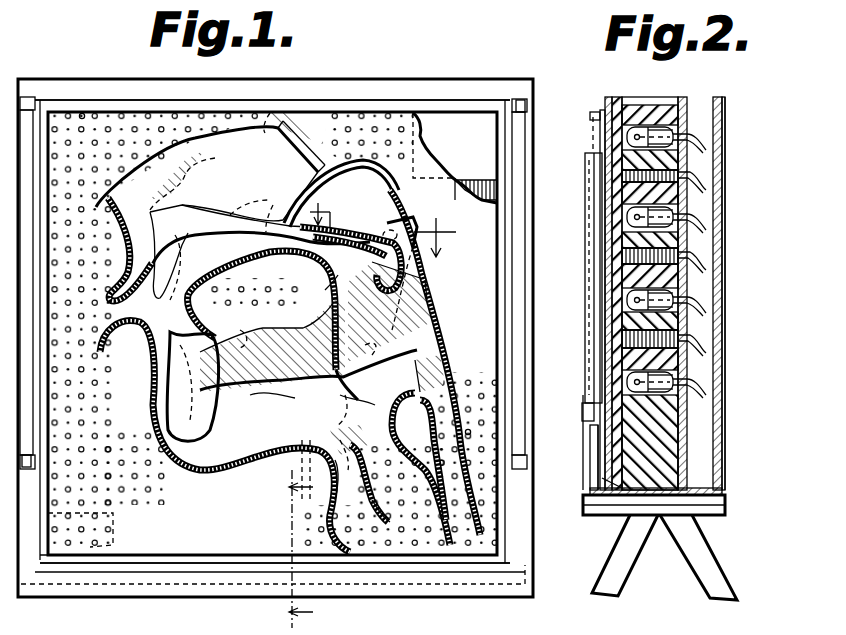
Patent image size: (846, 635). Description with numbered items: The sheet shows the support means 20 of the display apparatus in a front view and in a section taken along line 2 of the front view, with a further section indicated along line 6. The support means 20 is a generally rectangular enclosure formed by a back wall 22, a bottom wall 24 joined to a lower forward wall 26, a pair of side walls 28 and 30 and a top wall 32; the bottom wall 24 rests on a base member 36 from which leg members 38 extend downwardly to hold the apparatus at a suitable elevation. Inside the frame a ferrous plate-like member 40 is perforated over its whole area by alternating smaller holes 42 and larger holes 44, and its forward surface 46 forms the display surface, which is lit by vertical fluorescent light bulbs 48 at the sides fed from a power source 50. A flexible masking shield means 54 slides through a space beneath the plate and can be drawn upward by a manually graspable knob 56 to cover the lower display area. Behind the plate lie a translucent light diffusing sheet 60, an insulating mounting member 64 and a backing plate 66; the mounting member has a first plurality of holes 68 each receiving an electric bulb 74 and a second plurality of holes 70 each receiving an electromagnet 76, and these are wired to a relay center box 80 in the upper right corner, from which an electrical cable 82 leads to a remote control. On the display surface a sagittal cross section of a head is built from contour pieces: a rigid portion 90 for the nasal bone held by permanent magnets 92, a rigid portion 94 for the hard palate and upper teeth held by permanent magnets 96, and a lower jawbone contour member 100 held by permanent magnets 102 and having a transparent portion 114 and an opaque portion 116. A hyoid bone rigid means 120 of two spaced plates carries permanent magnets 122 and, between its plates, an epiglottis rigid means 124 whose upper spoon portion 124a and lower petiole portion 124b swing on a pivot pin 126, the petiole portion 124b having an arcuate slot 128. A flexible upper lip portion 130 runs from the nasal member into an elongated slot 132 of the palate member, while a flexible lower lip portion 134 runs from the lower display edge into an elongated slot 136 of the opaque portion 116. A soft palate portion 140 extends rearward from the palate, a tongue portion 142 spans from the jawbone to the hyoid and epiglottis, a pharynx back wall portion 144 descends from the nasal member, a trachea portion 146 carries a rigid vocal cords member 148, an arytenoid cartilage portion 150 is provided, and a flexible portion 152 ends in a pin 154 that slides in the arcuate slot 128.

In FIG. 1, the section line 2— 2 is at (269, 534).
In FIG. 1, the section line 6— 6 is at (382, 347).
In FIG. 1, the support means 20 is at (491, 76).
In FIG. 2, the support means 20 is at (750, 120).
In FIG. 2, the back wall 22 is at (728, 441).
In FIG. 2, the bottom wall 24 is at (700, 515).
In FIG. 1, the lower forward wall 26 is at (380, 590).
In FIG. 2, the lower forward wall 26 is at (592, 470).
In FIG. 1, the side wall 28 is at (20, 103).
In FIG. 1, the side wall 30 is at (532, 470).
In FIG. 2, the side wall 30 is at (548, 490).
In FIG. 1, the top wall 32 is at (344, 90).
In FIG. 2, the base member 36 is at (604, 515).
In FIG. 2, the leg members 38 is at (668, 580).
In FIG. 1, the plate-like member 40 is at (204, 514).
In FIG. 2, the plate-like member 40 is at (612, 97).
In FIG. 1, the holes 42 is at (82, 114).
In FIG. 2, the holes 42 is at (622, 175).
In FIG. 1, the holes 44 is at (97, 114).
In FIG. 2, the holes 44 is at (622, 140).
In FIG. 2, the forward surface 46 is at (606, 103).
In FIG. 1, the fluorescent light bulbs 48 is at (528, 146).
In FIG. 2, the fluorescent light bulbs 48 is at (594, 118).
In FIG. 1, the power source 50 is at (128, 531).
In FIG. 1, the masking shield means 54 is at (470, 580).
In FIG. 2, the masking shield means 54 is at (590, 450).
In FIG. 1, the manually graspable knob 56 is at (270, 565).
In FIG. 2, the manually graspable knob 56 is at (588, 412).
In FIG. 2, the light diffusing sheet 60 is at (614, 96).
In FIG. 2, the mounting member 64 is at (682, 98).
In FIG. 2, the backing plate 66 is at (718, 98).
In FIG. 2, the first plurality of holes 68 is at (632, 118).
In FIG. 2, the second plurality of holes 70 is at (575, 274).
In FIG. 2, the electric bulb 74 is at (710, 139).
In FIG. 2, the electromagnet 76 is at (710, 177).
In FIG. 1, the relay center box 80 is at (432, 112).
In FIG. 1, the electrical cable 82 is at (482, 203).
In FIG. 1, the rigid contour portion 90 is at (176, 148).
In FIG. 1, the permanent magnets 92 is at (208, 143).
In FIG. 1, the rigid contour portion 94 is at (222, 217).
In FIG. 1, the permanent magnets 96 is at (188, 286).
In FIG. 1, the lower jawbone contour member 100 is at (266, 325).
In FIG. 1, the permanent magnets 102 is at (178, 434).
In FIG. 1, the transparent jawbone portion 114 is at (272, 413).
In FIG. 1, the opaque jawbone portion 116 is at (316, 332).
In FIG. 1, the hyoid bone rigid means 120 is at (329, 391).
In FIG. 1, the permanent magnets 122 is at (368, 395).
In FIG. 1, the epiglottis rigid means 124 is at (368, 382).
In FIG. 1, the upper spoon portion 124a is at (369, 343).
In FIG. 1, the lower petiole portion 124b is at (369, 393).
In FIG. 1, the pivot pin 126 is at (360, 462).
In FIG. 1, the arcuate slot 128 is at (335, 470).
In FIG. 1, the upper lip flexible contour portion 130 is at (137, 260).
In FIG. 1, the elongated slot 132 is at (276, 259).
In FIG. 1, the lower lip flexible contour portion 134 is at (342, 520).
In FIG. 1, the elongated slot 136 is at (193, 386).
In FIG. 1, the soft palate flexible contour portion 140 is at (325, 290).
In FIG. 1, the tongue flexible contour portion 142 is at (246, 292).
In FIG. 1, the pharynx back wall flexible contour portion 144 is at (432, 322).
In FIG. 1, the trachea flexible contour portion 146 is at (376, 502).
In FIG. 1, the vocal cords rigid member 148 is at (362, 483).
In FIG. 1, the arytenoid cartilage flexible contour portion 150 is at (420, 469).
In FIG. 1, the flexible contour portion 152 is at (345, 464).
In FIG. 1, the pin 154 is at (345, 445).